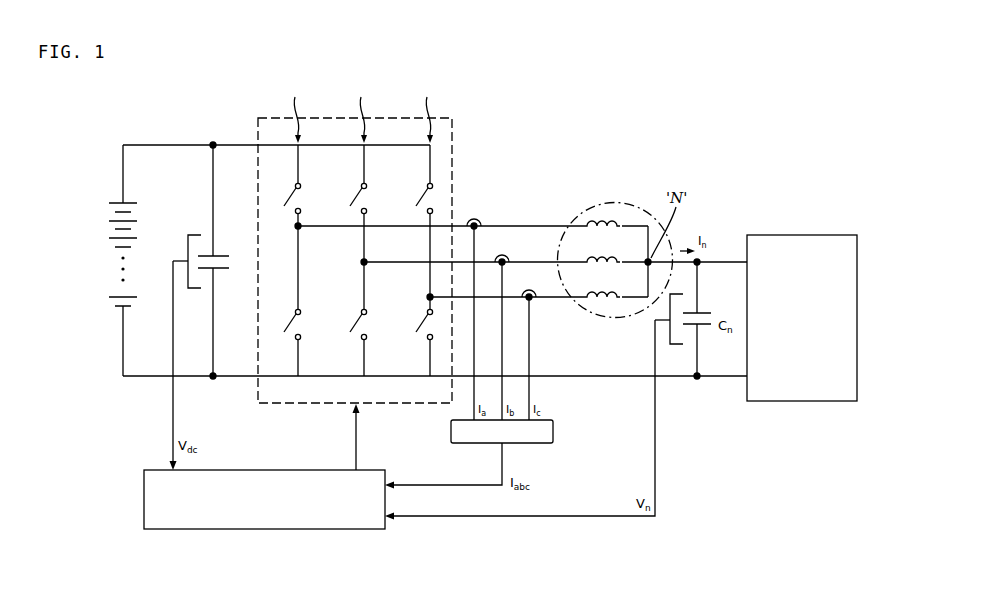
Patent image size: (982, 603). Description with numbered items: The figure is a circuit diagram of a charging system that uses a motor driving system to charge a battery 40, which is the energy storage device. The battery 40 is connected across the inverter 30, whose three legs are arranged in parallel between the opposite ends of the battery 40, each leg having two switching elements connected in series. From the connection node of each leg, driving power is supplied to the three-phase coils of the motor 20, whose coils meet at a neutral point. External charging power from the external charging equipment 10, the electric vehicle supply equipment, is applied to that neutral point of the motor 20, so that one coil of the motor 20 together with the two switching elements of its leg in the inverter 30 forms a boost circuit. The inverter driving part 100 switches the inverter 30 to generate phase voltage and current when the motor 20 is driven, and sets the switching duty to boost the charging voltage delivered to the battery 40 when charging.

The external charging equipment 10 is at (809, 235).
The motor 20 is at (617, 203).
The inverter 30 is at (452, 163).
The battery 40 is at (112, 268).
The inverter driving part 100 is at (280, 530).